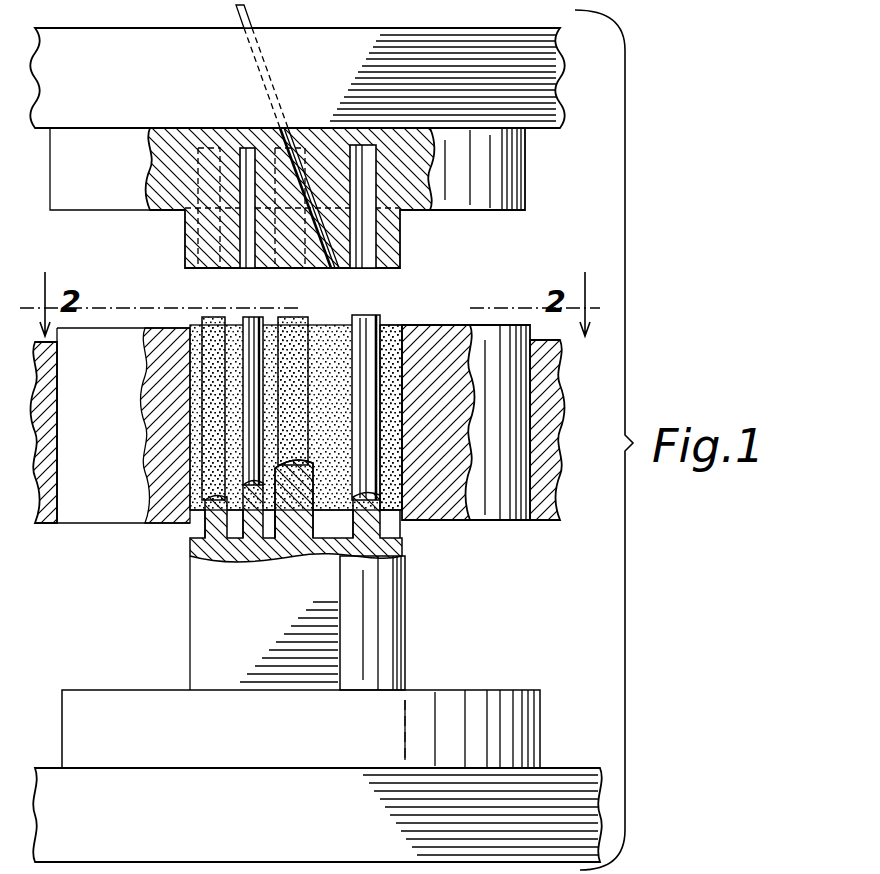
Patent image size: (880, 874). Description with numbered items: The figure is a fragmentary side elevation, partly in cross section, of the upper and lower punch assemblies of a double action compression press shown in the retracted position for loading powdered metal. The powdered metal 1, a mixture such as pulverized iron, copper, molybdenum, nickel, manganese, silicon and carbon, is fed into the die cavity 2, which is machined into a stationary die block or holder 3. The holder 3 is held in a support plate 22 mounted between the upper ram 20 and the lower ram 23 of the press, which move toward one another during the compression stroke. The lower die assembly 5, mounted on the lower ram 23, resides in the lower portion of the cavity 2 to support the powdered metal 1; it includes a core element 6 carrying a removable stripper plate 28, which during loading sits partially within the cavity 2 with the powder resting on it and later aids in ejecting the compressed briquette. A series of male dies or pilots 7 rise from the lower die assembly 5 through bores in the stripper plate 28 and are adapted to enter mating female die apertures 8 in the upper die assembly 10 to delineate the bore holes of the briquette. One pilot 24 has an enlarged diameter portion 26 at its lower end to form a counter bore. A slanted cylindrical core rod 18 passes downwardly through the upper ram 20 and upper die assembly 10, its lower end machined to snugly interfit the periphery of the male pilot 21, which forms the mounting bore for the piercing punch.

The powdered metal 1 is at (330, 356).
The die cavity 2 is at (398, 342).
The die block or holder 3 is at (503, 500).
The lower die assembly 5 is at (483, 682).
The core element 6 is at (378, 612).
The male dies or pilots 7 is at (389, 306).
The female die apertures 8 is at (368, 232).
The upper die assembly 10 is at (501, 178).
The core rod 18 is at (246, 12).
The upper ram 20 is at (528, 64).
The male pilot 21 is at (366, 438).
The support plate 22 is at (550, 378).
The lower ram 23 is at (568, 782).
The male die or pilot 24 is at (296, 318).
The enlarged diameter portion 26 is at (300, 555).
The stripper plate 28 is at (392, 525).